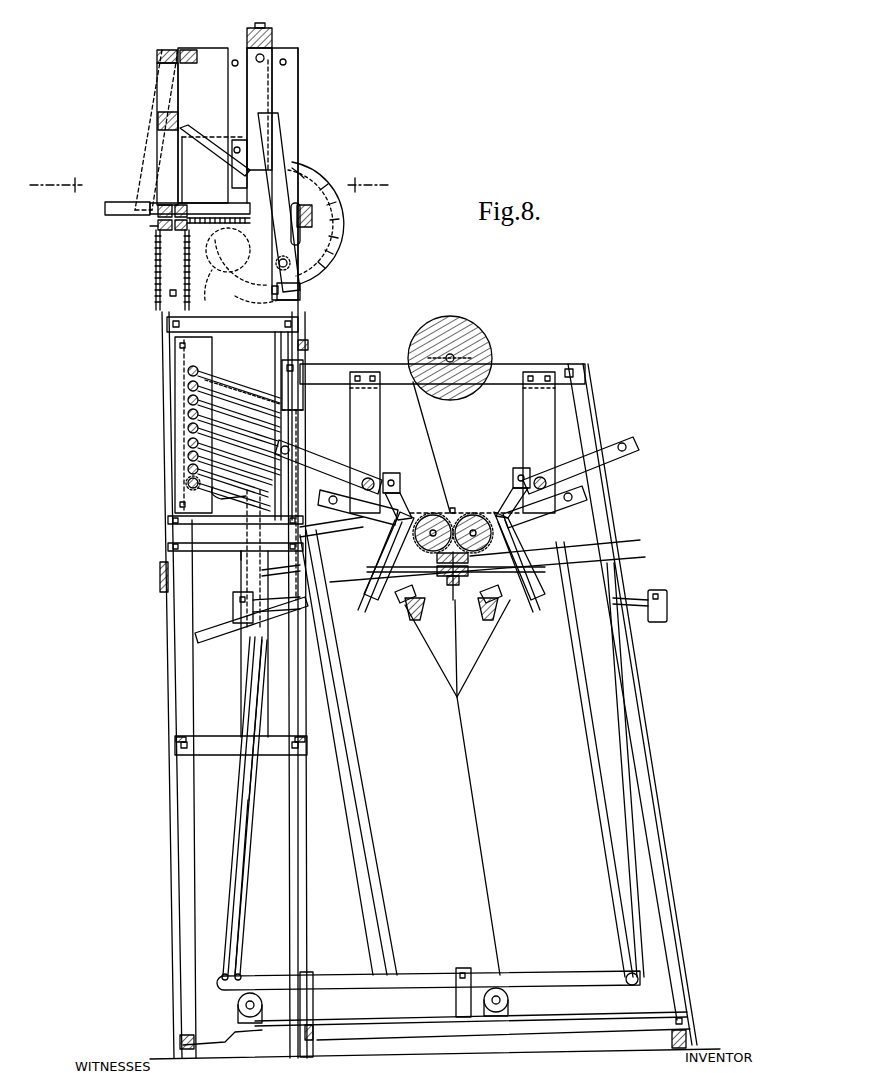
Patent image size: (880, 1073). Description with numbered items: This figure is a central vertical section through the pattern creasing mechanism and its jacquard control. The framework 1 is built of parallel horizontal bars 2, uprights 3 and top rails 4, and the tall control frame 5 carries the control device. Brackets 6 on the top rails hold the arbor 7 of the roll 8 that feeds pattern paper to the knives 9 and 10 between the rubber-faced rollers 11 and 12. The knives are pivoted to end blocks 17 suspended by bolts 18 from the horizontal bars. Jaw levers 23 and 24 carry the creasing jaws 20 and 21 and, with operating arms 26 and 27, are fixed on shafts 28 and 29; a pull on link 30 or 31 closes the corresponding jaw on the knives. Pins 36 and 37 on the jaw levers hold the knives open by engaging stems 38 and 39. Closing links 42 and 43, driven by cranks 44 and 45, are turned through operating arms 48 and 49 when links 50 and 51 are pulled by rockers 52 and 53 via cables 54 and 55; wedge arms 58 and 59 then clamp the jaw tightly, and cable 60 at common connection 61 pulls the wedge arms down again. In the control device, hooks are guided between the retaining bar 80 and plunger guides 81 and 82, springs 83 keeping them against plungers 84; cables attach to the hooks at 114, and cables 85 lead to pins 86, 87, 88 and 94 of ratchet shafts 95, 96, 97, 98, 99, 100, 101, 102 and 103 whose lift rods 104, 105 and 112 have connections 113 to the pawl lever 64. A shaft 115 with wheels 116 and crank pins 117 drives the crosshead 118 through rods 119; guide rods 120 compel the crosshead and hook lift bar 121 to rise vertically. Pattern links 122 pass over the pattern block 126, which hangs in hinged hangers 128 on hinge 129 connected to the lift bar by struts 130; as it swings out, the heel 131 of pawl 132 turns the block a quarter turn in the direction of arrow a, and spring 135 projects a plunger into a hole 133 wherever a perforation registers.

The framework 1 is at (590, 416).
The horizontal bars 2 is at (212, 580).
The uprights 3 is at (372, 429).
The top rails 4 is at (508, 369).
The control frame 5 is at (300, 340).
The brackets 6 is at (497, 361).
The arbor 7 is at (460, 351).
The roll 8 is at (458, 321).
The knife 9 is at (456, 587).
The knife 10 is at (452, 586).
The rubber-faced roller 11 is at (476, 515).
The rubber-faced roller 12 is at (432, 514).
The end blocks 17 is at (522, 562).
The bolts 18 is at (454, 512).
The creasing jaw 20 is at (512, 618).
The creasing jaw 21 is at (396, 640).
The jaw lever 23 is at (522, 614).
The jaw lever 24 is at (392, 626).
The operating arm 26 is at (586, 494).
The operating arm 27 is at (360, 519).
The shaft 28 is at (520, 527).
The shaft 29 is at (402, 488).
The link 30 is at (590, 693).
The link 31 is at (352, 700).
The pin 36 is at (600, 563).
The pin 37 is at (388, 617).
The stem 38 is at (600, 546).
The stem 39 is at (333, 518).
The closing link 42 is at (505, 485).
The closing link 43 is at (420, 621).
The crank 44 is at (508, 466).
The crank 45 is at (396, 478).
The operating arm 48 is at (625, 452).
The operating arm 49 is at (328, 464).
The link 50 is at (628, 659).
The link 51 is at (350, 753).
The rocker 52 is at (432, 976).
The rocker 53 is at (340, 976).
The cable 54 is at (240, 947).
The cable 55 is at (228, 931).
The wedge arm 58 is at (658, 592).
The wedge arm 59 is at (236, 605).
The cable 60 is at (250, 890).
The common connection 61 is at (438, 681).
The pawl lever 64 is at (228, 637).
The retaining bar 80 is at (313, 216).
The plunger guide 81 is at (258, 255).
The plunger guide 82 is at (240, 250).
The springs 83 is at (301, 232).
The plungers 84 is at (302, 200).
The cables 85 is at (286, 356).
The pin 86 is at (224, 380).
The pin 87 is at (235, 394).
The pin 88 is at (200, 417).
The pin 94 is at (205, 515).
The ratchet shaft 95 is at (188, 371).
The ratchet shaft 96 is at (188, 386).
The ratchet shaft 97 is at (188, 400).
The ratchet shaft 98 is at (188, 428).
The ratchet shaft 99 is at (188, 443).
The ratchet shaft 100 is at (188, 456).
The ratchet shaft 101 is at (188, 469).
The ratchet shaft 102 is at (188, 483).
The ratchet shaft 103 is at (192, 488).
The lift rod 104 is at (300, 392).
The lift rod 105 is at (303, 407).
The lift rod 112 is at (212, 490).
The independent connections 113 is at (262, 572).
The attachment 114 is at (252, 292).
The shaft 115 is at (305, 265).
The wheel 116 is at (318, 250).
The crank pin 117 is at (300, 292).
The crosshead 118 is at (272, 38).
The rod 119 is at (268, 100).
The suspension and guide rods 120 is at (268, 78).
The hook lift bar 121 is at (285, 174).
The pattern link 122 is at (183, 290).
The pattern block 126 is at (167, 236).
The hangers 128 is at (162, 92).
The hinge 129 is at (178, 50).
The hinged struts 130 is at (213, 150).
The heel 131 is at (140, 203).
The pawl 132 is at (105, 208).
The holes 133 is at (160, 262).
The spring 135 is at (212, 212).
The arrow a is at (150, 229).